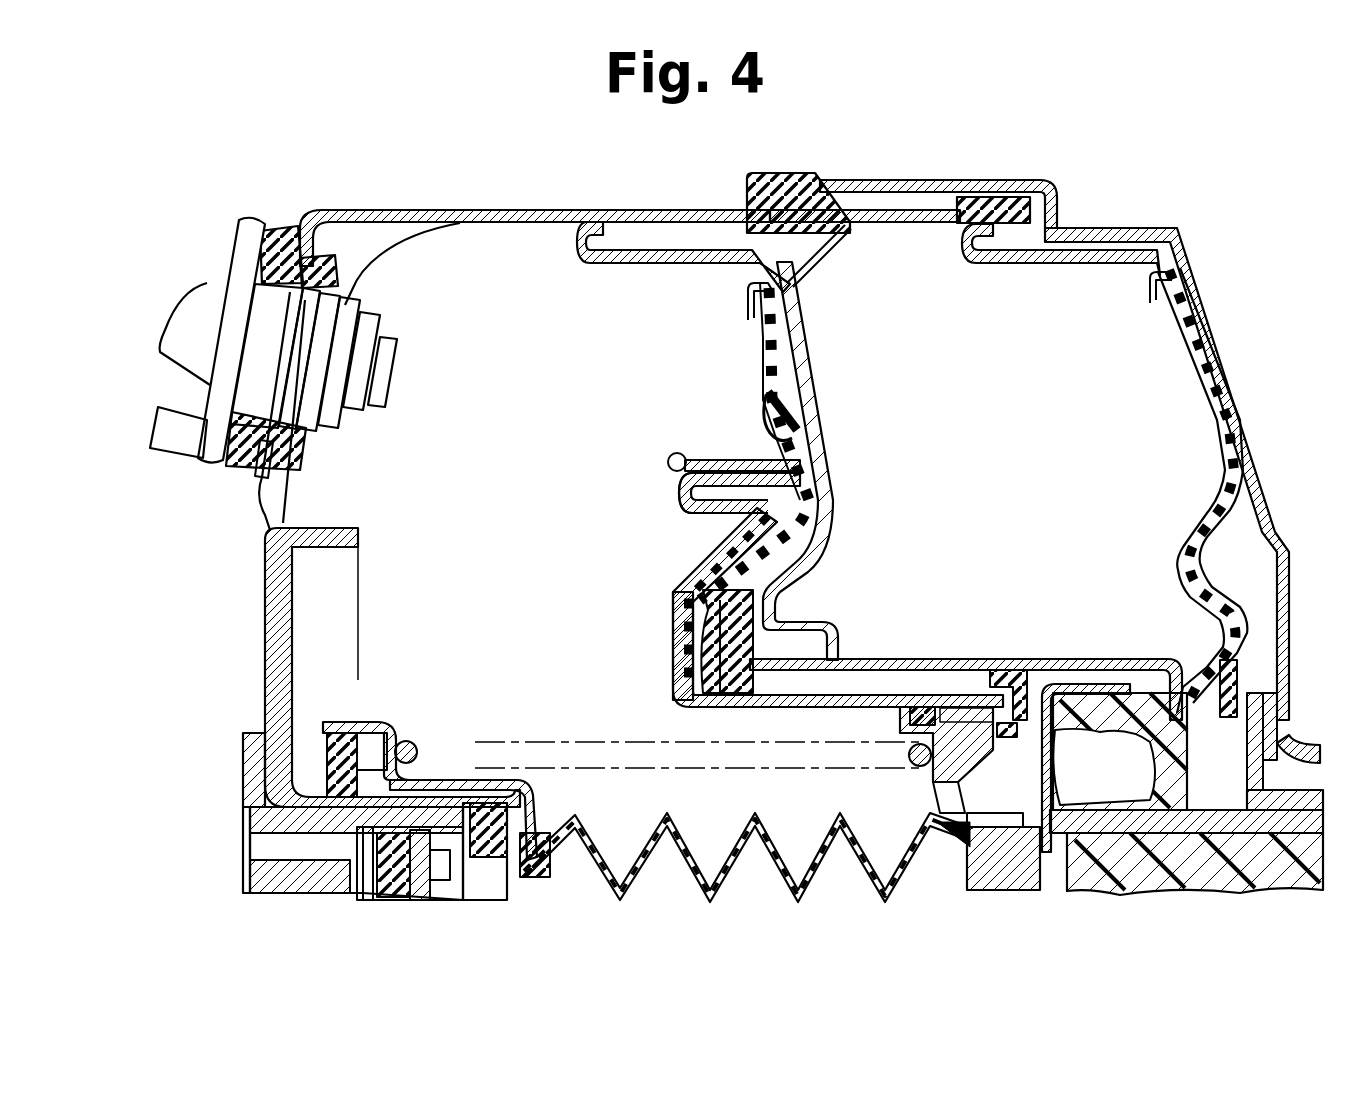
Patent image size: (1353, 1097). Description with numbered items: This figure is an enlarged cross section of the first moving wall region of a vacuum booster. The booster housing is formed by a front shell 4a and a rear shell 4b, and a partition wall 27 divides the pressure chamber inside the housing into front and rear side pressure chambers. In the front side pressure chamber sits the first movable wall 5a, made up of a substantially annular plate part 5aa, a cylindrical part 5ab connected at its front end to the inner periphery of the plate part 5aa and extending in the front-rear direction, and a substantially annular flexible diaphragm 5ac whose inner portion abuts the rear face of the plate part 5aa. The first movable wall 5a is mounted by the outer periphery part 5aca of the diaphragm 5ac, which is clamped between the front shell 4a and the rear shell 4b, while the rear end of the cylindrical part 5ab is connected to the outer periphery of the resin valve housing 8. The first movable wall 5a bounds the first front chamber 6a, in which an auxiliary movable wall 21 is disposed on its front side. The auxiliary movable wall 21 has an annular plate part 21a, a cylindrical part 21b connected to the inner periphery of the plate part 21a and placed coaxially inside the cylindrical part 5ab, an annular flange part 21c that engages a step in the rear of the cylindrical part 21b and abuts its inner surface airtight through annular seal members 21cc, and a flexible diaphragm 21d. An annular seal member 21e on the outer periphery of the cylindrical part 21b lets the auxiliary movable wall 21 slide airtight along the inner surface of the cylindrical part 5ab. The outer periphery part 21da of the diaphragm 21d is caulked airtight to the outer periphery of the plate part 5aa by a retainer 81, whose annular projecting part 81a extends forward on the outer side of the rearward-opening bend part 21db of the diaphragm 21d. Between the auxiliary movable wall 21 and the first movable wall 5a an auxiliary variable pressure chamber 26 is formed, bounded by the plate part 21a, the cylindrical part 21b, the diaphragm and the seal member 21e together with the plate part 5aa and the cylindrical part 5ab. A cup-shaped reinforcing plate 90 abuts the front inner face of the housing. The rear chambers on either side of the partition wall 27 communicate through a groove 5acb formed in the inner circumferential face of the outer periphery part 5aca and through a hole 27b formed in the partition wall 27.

The front shell 4a is at (552, 212).
The rear shell 4b is at (990, 180).
The first movable wall 5a is at (878, 653).
The plate part 5aa is at (800, 510).
The cylindrical part 5ab is at (1040, 206).
The flexible diaphragm 5ac is at (600, 265).
The outer periphery part 5aca is at (757, 198).
The groove 5acb is at (845, 235).
The first front chamber 6a is at (447, 347).
The valve housing 8 is at (1150, 700).
The auxiliary movable wall 21 is at (668, 643).
The plate part 21a is at (680, 578).
The cylindrical part 21b is at (817, 705).
The annular flange part 21c is at (990, 680).
The annular seal members 21cc is at (913, 732).
The flexible diaphragm 21d is at (668, 487).
The outer periphery part 21da is at (770, 393).
The bend part 21db is at (680, 497).
The annular seal member 21e is at (1013, 678).
The auxiliary variable pressure chamber 26 is at (913, 680).
The partition wall 27 is at (836, 453).
The hole 27b is at (873, 197).
The retainer 81 is at (730, 455).
The annular projecting part 81a is at (680, 455).
The reinforcing plate 90 is at (300, 633).